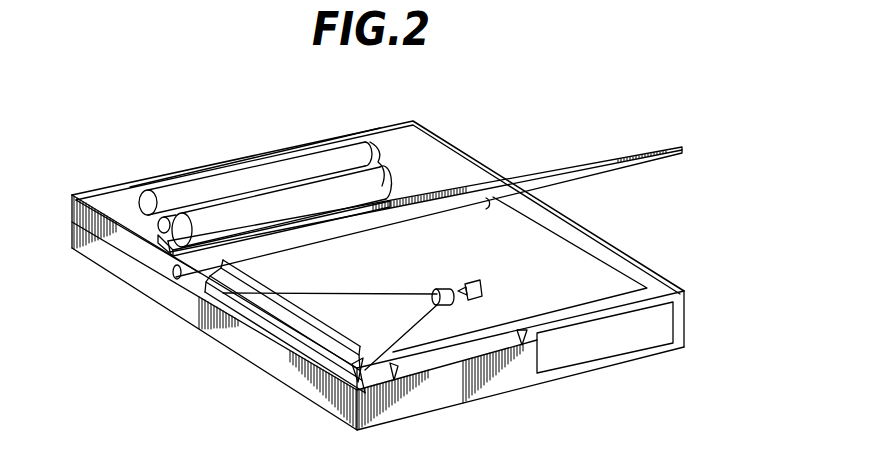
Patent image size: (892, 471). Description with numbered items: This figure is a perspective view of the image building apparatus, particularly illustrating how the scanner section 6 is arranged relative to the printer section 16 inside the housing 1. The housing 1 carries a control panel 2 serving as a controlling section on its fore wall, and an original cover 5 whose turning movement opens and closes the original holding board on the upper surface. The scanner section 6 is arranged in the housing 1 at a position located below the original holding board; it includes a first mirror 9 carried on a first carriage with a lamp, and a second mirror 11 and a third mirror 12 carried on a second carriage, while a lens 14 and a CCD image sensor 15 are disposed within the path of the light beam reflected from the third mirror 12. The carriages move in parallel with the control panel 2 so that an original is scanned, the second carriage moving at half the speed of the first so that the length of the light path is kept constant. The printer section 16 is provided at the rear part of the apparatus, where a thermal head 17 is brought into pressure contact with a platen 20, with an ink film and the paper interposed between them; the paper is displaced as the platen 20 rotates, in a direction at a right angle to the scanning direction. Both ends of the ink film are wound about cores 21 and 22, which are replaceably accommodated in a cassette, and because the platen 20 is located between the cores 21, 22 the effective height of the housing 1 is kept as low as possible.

The housing 1 is at (620, 252).
The control panel 2 is at (624, 342).
The original cover 5 is at (580, 165).
The scanner section 6 is at (443, 258).
The first mirror 9 is at (397, 378).
The second mirror 11 is at (297, 340).
The third mirror 12 is at (345, 396).
The lens 14 is at (448, 305).
The CCD image sensor 15 is at (484, 291).
The printer section 16 is at (422, 165).
The thermal head 17 is at (175, 245).
The platen 20 is at (160, 223).
The core 21 is at (222, 172).
The core 22 is at (300, 185).